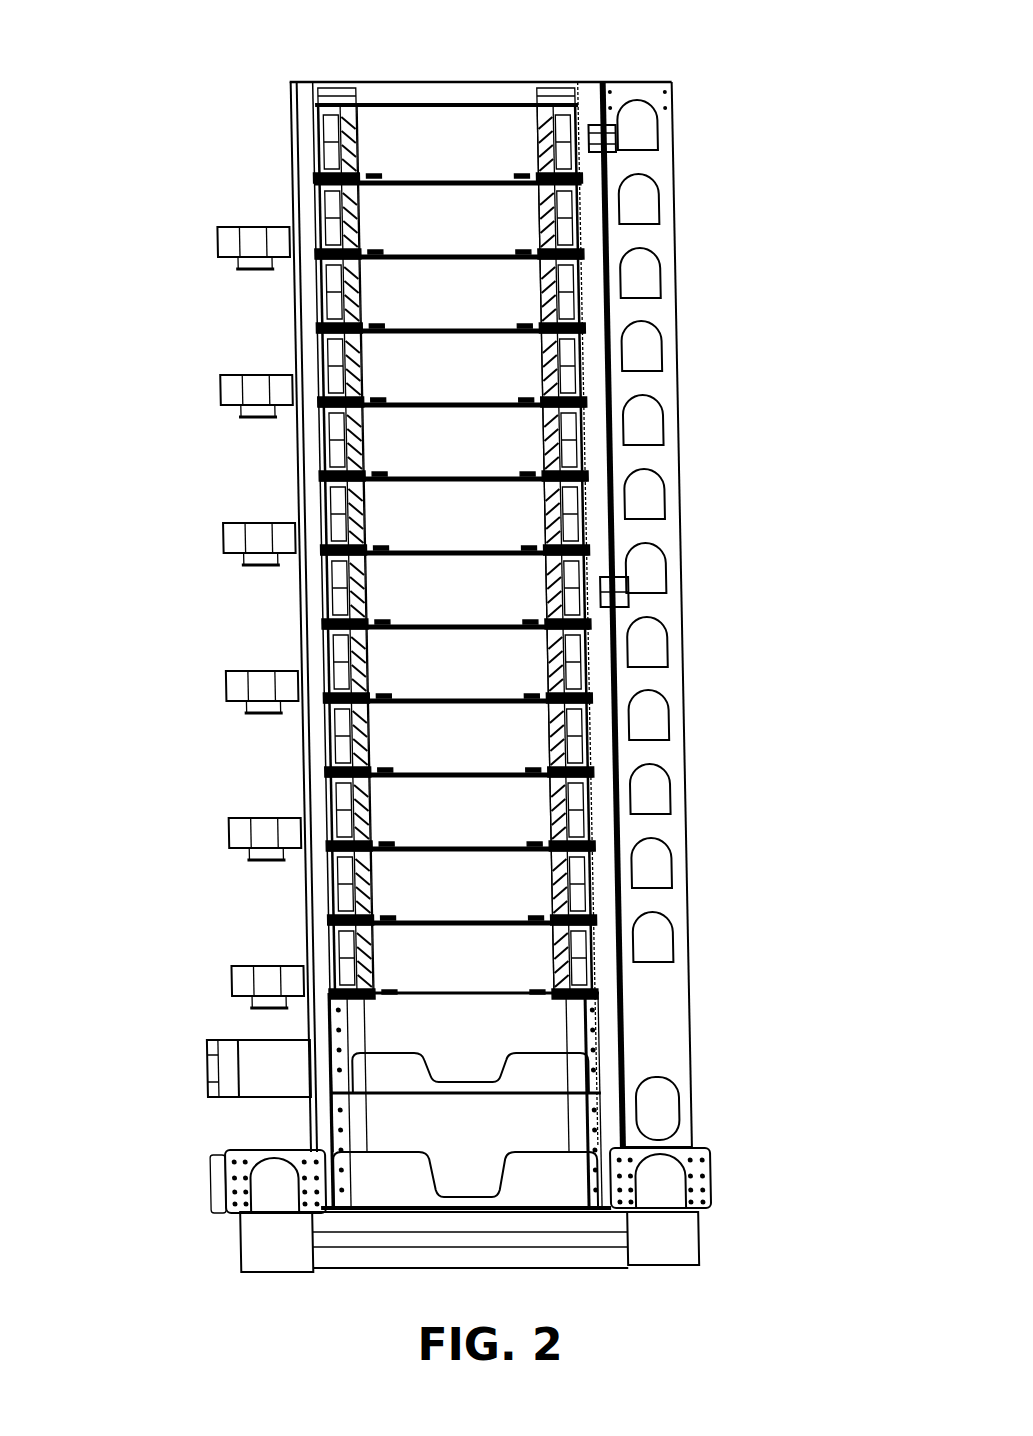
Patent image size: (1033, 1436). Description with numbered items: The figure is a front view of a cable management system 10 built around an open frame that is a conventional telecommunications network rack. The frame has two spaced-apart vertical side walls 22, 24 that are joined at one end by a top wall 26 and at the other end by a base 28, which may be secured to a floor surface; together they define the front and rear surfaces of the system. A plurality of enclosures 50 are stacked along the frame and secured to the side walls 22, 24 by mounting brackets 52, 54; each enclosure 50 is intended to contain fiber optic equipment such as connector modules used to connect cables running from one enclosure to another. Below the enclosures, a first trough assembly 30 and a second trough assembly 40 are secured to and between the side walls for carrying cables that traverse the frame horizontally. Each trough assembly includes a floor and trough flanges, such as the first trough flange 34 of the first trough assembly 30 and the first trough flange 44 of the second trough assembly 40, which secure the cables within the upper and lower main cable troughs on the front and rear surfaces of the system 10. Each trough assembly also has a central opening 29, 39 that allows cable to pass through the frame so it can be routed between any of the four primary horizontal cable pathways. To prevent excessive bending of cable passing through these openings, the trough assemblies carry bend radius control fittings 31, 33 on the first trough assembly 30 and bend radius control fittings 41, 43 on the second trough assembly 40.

The cable management system 10 is at (251, 315).
The vertical side wall 22 is at (590, 95).
The vertical side wall 24 is at (290, 120).
The top wall 26 is at (470, 90).
The base 28 is at (333, 1260).
The central opening 29 is at (520, 1130).
The first trough assembly 30 is at (531, 1182).
The bend radius control fitting 31 is at (337, 1127).
The bend radius control fitting 33 is at (561, 1112).
The first trough flange 34 is at (359, 1195).
The central opening 39 is at (480, 1022).
The second trough assembly 40 is at (535, 1066).
The bend radius control fitting 41 is at (337, 1040).
The bend radius control fitting 43 is at (560, 1025).
The first trough flange 44 is at (358, 1082).
The enclosure 50 is at (393, 745).
The mounting bracket 52 is at (578, 167).
The mounting bracket 54 is at (315, 157).